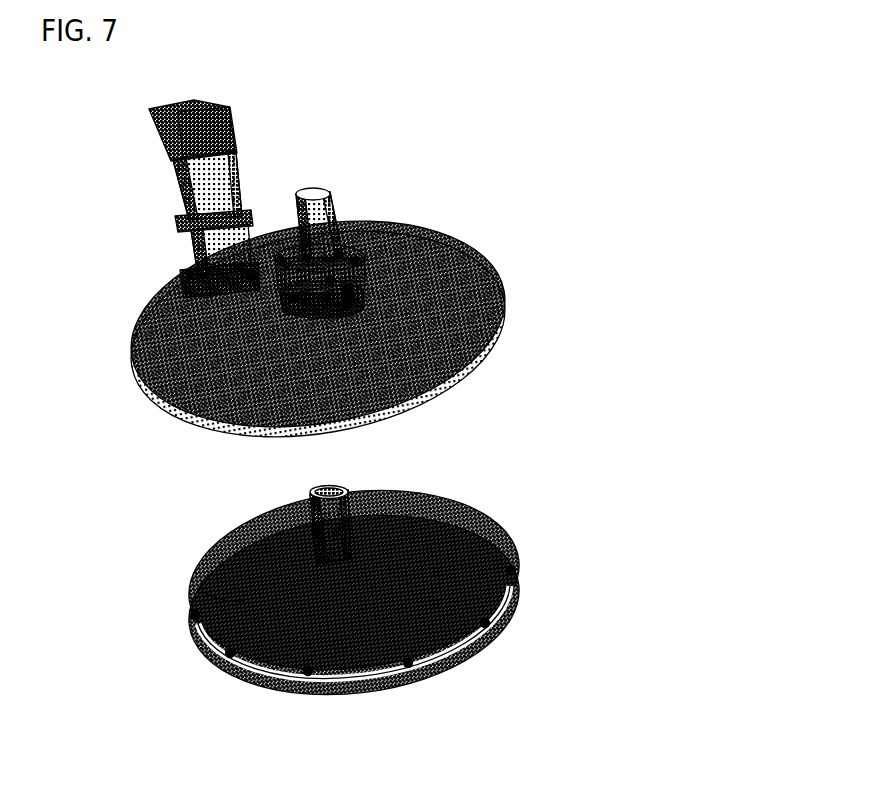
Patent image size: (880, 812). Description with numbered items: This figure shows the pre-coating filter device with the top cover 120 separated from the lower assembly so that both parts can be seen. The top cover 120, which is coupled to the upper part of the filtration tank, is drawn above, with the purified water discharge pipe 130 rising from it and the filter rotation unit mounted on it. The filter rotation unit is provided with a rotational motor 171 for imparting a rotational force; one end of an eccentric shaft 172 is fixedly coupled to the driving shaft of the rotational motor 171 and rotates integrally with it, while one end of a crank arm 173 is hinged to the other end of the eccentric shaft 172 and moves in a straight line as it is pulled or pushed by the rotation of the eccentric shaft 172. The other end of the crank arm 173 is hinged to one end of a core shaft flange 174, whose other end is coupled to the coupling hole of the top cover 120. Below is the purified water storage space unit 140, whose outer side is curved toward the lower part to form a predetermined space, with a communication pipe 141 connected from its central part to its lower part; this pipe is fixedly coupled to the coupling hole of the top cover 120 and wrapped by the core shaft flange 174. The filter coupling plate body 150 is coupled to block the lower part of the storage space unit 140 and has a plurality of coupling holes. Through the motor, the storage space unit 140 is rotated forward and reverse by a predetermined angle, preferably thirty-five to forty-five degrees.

The top cover 120 is at (437, 267).
The purified water discharge pipe 130 is at (326, 201).
The purified water storage space unit 140 is at (183, 588).
The communication pipe 141 is at (330, 527).
The filter coupling plate body 150 is at (268, 680).
The rotational motor 171 is at (167, 181).
The eccentric shaft 172 is at (223, 277).
The crank arm 173 is at (287, 297).
The core shaft flange 174 is at (308, 297).